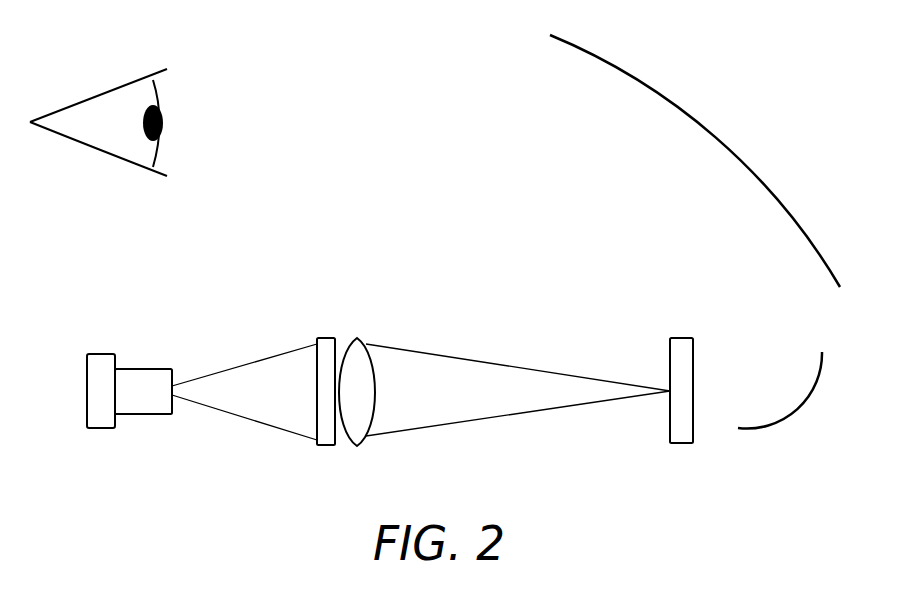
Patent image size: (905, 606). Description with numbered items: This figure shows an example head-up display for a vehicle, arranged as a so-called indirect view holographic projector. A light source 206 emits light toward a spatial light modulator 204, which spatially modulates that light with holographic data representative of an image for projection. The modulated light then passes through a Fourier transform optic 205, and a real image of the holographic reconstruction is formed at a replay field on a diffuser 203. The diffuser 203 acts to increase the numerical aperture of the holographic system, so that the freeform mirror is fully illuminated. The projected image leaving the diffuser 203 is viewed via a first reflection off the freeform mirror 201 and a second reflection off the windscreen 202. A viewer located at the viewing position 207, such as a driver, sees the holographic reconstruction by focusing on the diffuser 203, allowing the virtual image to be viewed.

The freeform mirror 201 is at (787, 418).
The windscreen 202 is at (707, 130).
The diffuser 203 is at (683, 445).
The spatial light modulator 204 is at (327, 447).
The Fourier transform optic 205 is at (353, 337).
The light source 206 is at (103, 430).
The viewing position 207 is at (102, 100).